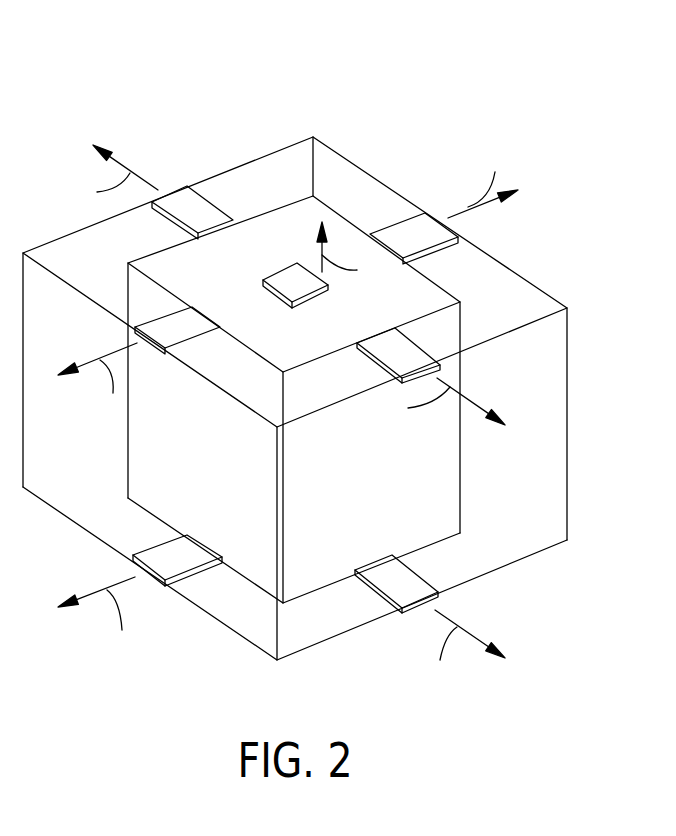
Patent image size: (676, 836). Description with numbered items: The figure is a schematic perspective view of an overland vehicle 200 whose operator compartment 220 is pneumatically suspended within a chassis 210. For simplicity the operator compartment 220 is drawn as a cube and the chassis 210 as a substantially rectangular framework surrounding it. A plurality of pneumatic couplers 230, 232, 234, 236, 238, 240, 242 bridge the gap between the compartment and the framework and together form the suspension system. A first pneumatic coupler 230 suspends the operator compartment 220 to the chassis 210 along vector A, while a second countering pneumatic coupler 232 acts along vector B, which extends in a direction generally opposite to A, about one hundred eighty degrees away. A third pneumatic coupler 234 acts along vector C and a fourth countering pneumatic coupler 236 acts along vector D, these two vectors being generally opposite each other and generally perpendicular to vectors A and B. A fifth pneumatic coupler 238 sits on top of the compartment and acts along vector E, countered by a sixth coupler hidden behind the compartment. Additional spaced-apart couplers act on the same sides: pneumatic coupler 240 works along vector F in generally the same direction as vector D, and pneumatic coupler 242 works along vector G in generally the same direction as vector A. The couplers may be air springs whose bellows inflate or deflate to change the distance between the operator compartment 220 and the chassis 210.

The overland vehicle 200 is at (468, 63).
The chassis 210 is at (532, 285).
The operator compartment 220 is at (273, 223).
The first pneumatic coupler 230 is at (422, 350).
The second pneumatic coupler 232 is at (223, 212).
The third pneumatic coupler 234 is at (405, 222).
The fourth pneumatic coupler 236 is at (157, 320).
The fifth pneumatic coupler 238 is at (328, 288).
The pneumatic coupler 240 is at (157, 555).
The pneumatic coupler 242 is at (418, 582).